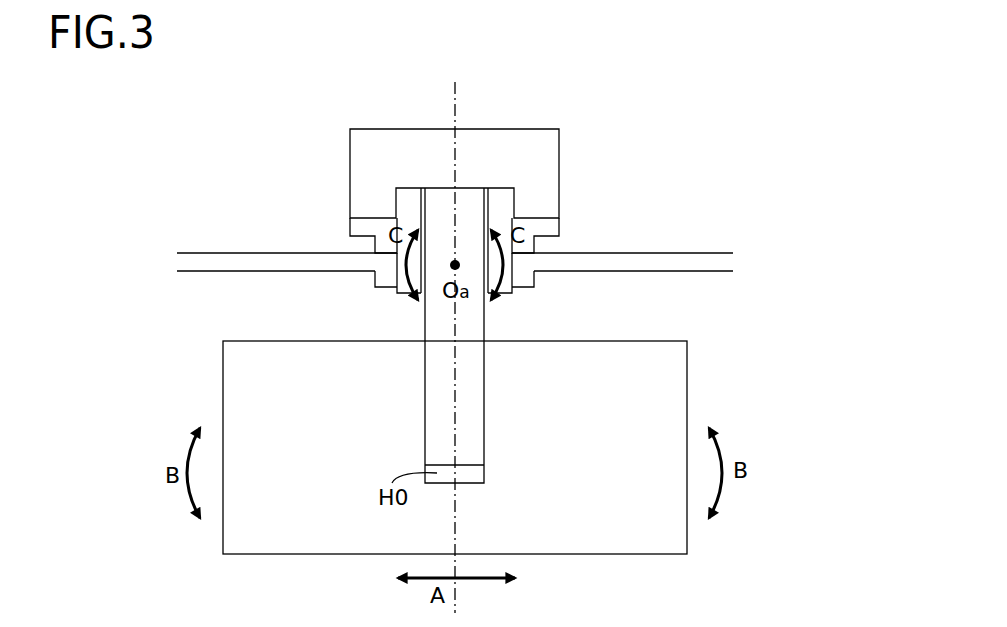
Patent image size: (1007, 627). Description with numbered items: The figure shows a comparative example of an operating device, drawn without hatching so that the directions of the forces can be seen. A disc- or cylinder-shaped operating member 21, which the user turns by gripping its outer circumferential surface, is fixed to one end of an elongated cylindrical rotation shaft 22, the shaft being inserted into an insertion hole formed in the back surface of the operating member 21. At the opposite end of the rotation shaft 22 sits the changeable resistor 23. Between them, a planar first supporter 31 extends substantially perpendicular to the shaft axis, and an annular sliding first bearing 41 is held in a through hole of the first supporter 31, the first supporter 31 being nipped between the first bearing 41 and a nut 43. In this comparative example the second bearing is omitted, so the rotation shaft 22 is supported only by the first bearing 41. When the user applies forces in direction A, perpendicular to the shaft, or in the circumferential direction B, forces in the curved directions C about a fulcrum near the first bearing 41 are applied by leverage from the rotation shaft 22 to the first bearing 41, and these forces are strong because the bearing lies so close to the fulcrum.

The operating member 21 is at (223, 377).
The rotation shaft 22 is at (466, 188).
The changeable resistor 23 is at (559, 163).
The first supporter 31 is at (213, 253).
The first bearing 41 is at (350, 219).
The nut 43 is at (377, 287).